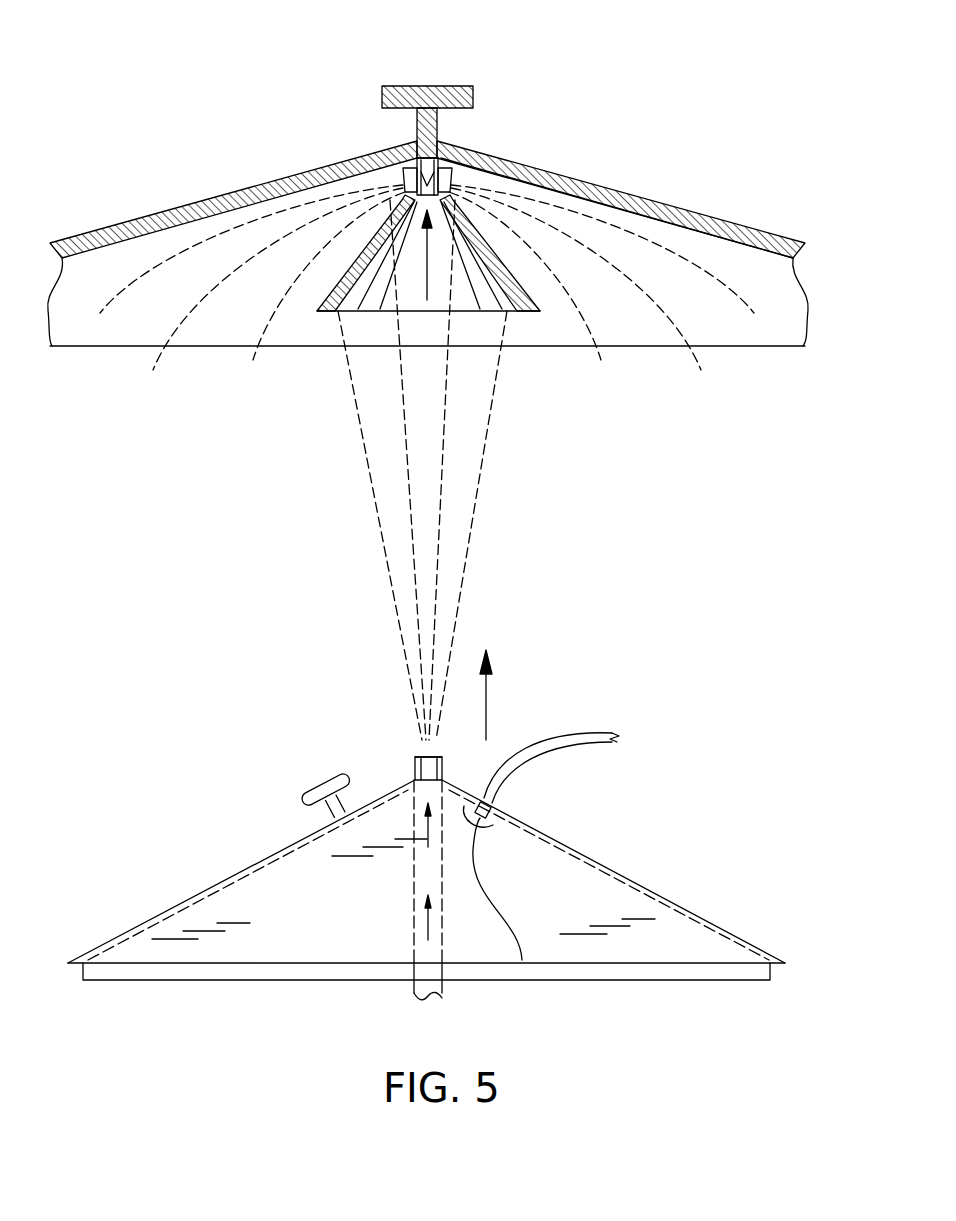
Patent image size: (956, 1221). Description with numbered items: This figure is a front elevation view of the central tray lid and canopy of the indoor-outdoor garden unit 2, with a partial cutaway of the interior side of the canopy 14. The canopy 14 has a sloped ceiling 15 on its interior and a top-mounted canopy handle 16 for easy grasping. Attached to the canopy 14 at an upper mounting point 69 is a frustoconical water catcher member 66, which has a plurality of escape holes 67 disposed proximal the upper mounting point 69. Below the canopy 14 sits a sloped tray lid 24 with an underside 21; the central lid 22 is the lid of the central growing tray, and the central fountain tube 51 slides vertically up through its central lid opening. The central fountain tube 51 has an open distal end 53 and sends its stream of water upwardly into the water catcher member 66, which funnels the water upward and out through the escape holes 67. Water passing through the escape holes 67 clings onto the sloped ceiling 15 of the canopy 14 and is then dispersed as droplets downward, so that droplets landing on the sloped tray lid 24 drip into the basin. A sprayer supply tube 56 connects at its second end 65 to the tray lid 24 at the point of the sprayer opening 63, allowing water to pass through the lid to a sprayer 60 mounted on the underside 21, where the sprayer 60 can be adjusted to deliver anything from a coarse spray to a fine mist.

The indoor-outdoor garden unit 2 is at (222, 152).
The canopy 14 is at (593, 183).
The sloped ceiling 15 is at (647, 217).
The canopy handle 16 is at (466, 86).
The underside 21 is at (663, 905).
The central lid 22 is at (196, 925).
The tray lid 24 is at (238, 874).
The central fountain tube 51 is at (414, 768).
The open distal end 53 is at (437, 757).
The sprayer supply tube 56 is at (588, 735).
The sprayer 60 is at (522, 960).
The sprayer opening 63 is at (490, 800).
The second end 65 is at (492, 806).
The water catcher member 66 is at (522, 312).
The escape holes 67 is at (403, 182).
The upper mounting point 69 is at (415, 148).